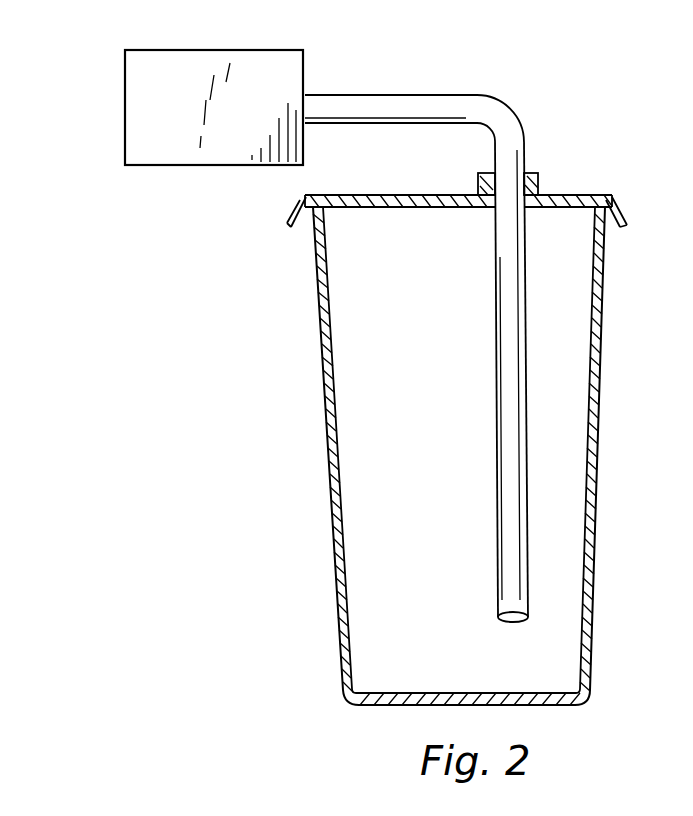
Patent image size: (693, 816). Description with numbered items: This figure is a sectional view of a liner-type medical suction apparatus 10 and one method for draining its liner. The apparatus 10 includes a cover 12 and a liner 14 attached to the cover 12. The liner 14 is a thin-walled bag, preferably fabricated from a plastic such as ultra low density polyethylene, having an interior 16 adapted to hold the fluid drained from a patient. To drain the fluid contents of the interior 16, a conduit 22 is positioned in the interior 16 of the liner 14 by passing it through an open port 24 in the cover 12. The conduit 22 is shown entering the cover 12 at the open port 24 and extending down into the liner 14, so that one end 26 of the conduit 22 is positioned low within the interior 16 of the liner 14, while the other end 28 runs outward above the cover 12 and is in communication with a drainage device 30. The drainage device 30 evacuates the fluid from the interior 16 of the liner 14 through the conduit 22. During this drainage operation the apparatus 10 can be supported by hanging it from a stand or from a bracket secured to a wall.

The liner-type medical suction apparatus 10 is at (600, 288).
The cover 12 is at (597, 193).
The liner 14 is at (598, 379).
The interior 16 is at (563, 431).
The conduit 22 is at (496, 340).
The open port 24 is at (538, 176).
The one end 26 is at (508, 598).
The other end 28 is at (309, 100).
The drainage device 30 is at (229, 58).